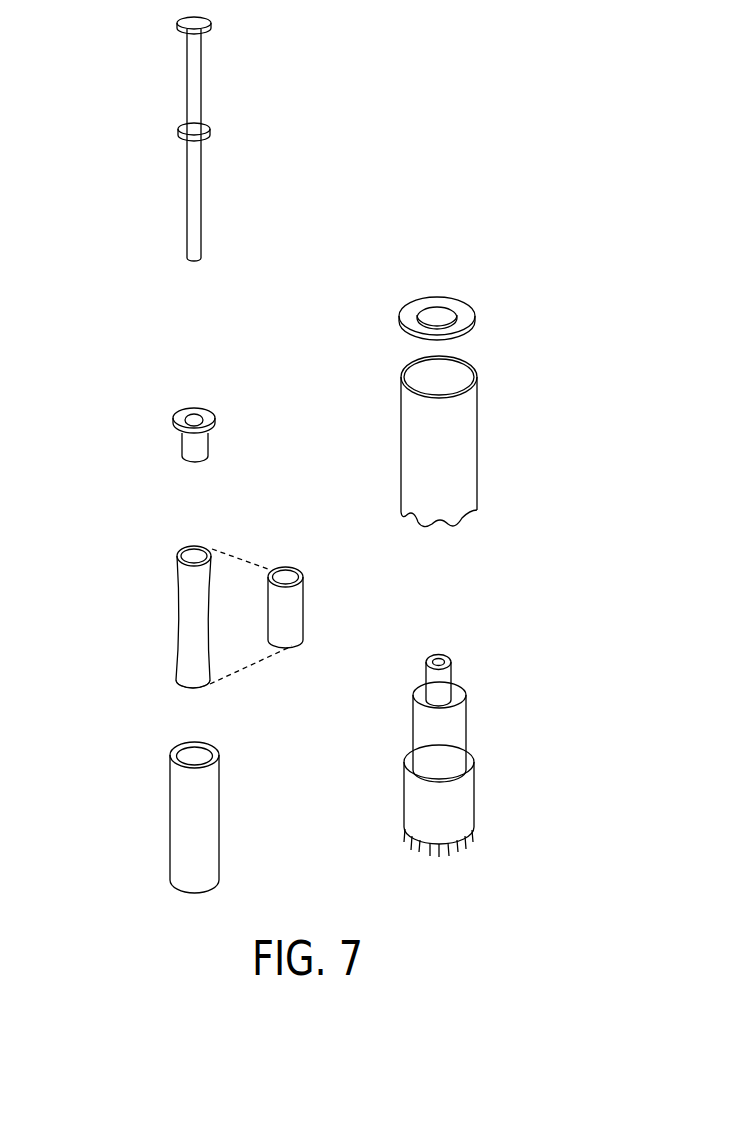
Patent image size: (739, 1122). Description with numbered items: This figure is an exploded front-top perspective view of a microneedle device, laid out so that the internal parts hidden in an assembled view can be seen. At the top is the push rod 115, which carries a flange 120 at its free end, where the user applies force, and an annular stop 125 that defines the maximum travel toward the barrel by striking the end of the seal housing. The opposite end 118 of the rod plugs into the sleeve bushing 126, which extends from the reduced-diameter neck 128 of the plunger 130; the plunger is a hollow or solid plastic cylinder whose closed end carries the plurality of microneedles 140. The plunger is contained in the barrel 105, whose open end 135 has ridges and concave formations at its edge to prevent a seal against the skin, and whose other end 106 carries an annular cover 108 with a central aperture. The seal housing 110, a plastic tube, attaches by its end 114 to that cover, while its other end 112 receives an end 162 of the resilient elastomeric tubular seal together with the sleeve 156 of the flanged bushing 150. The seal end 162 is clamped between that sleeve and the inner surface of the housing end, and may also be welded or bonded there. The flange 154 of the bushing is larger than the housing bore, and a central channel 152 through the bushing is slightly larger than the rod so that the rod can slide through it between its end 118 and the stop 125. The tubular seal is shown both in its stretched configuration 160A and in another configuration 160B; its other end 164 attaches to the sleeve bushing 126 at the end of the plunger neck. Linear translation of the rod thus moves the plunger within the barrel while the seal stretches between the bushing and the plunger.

The barrel 105 is at (507, 438).
The end of the barrel 106 is at (452, 381).
The cover 108 is at (466, 316).
The seal housing 110 is at (150, 814).
The end of the seal housing 112 is at (178, 745).
The end of the seal housing 114 is at (197, 895).
The rod 115 is at (198, 95).
The end of the rod 118 is at (200, 259).
The flange 120 is at (210, 31).
The annular stop 125 is at (208, 138).
The sleeve bushing 126 is at (453, 667).
The neck 128 is at (496, 700).
The plunger 130 is at (500, 738).
The open end of the barrel 135 is at (458, 520).
The microneedles 140 is at (440, 844).
The flanged bushing 150 is at (172, 436).
The central channel 152 is at (206, 420).
The flange 154 is at (178, 422).
The sleeve 156 is at (190, 459).
The resilient elastomeric tubular seal 160A is at (215, 612).
The resilient elastomeric tubular seal 160B is at (286, 577).
The end of the seal 162 is at (197, 556).
The end of the seal 164 is at (196, 688).